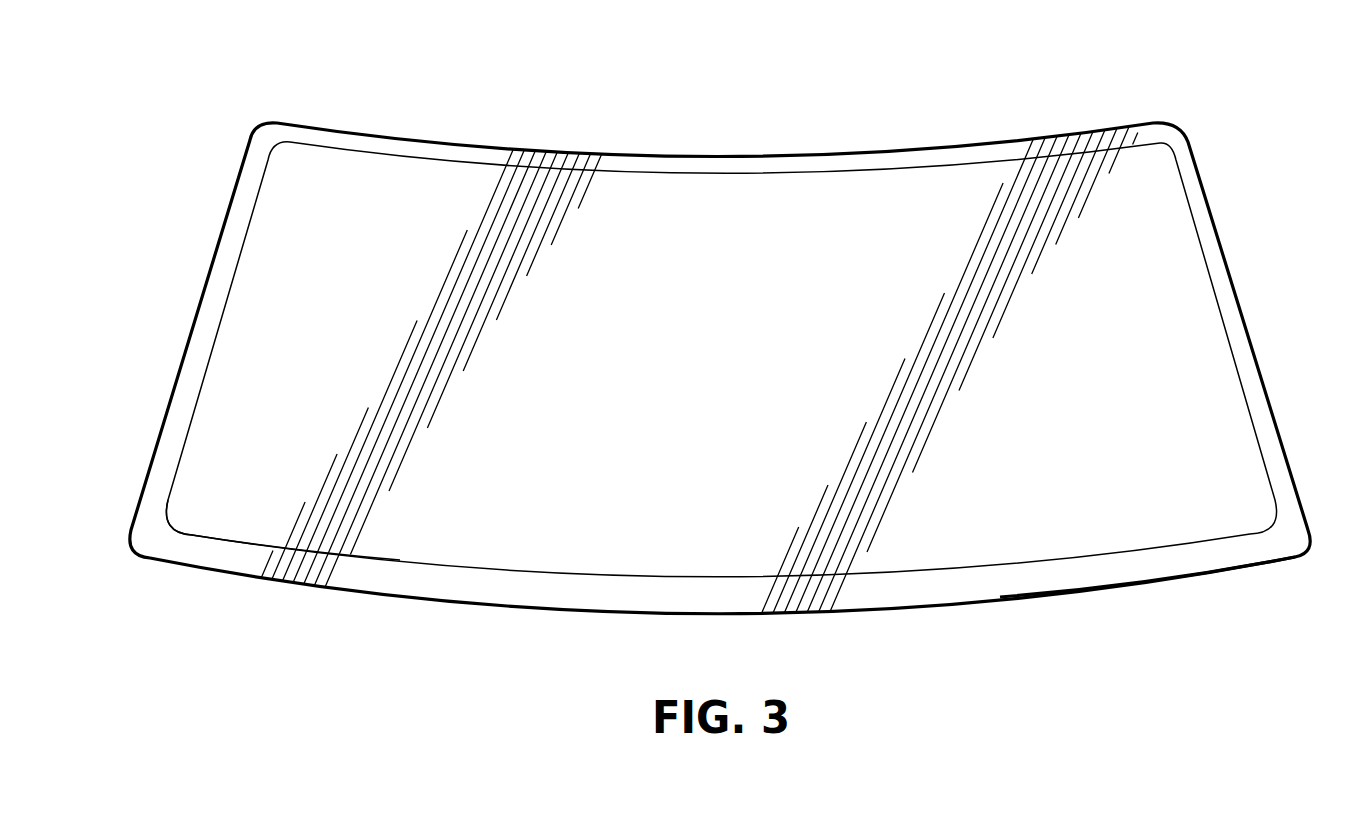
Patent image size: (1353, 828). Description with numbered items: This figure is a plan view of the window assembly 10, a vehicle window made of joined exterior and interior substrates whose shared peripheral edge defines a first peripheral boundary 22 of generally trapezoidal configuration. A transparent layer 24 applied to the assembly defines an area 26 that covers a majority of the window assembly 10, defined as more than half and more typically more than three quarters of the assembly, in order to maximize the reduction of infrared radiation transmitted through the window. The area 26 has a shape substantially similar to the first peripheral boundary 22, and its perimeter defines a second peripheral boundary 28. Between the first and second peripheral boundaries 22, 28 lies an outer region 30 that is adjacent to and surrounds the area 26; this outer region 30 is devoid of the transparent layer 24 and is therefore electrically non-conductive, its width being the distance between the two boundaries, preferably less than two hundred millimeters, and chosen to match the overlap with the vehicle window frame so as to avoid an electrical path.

The window assembly 10 is at (730, 360).
The first peripheral boundary 22 is at (720, 156).
The transparent layer 24 is at (245, 520).
The area 26 is at (859, 243).
The second peripheral boundary 28 is at (787, 171).
The outer region 30 is at (1122, 570).